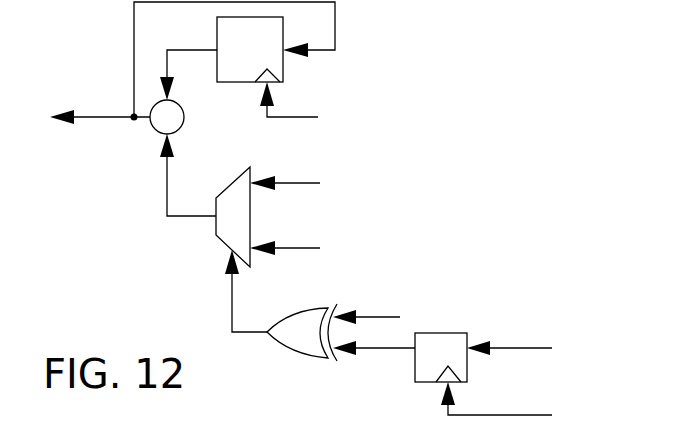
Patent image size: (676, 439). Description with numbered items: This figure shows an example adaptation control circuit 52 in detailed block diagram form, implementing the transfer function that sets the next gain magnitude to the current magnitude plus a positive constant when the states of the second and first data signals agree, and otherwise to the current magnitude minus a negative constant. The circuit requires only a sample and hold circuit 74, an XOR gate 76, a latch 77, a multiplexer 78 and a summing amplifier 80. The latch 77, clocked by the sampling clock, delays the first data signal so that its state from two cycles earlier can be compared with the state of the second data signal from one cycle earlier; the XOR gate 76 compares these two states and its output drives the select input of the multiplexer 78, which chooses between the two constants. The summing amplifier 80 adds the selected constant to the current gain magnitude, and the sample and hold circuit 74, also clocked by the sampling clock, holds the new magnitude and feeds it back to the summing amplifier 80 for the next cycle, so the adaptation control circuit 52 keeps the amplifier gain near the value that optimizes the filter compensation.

The adaptation control circuit 52 is at (98, 257).
The sample and hold circuit 74 is at (247, 76).
The XOR gate 76 is at (314, 338).
The latch 77 is at (416, 366).
The multiplexer 78 is at (246, 231).
The summing amplifier 80 is at (184, 114).